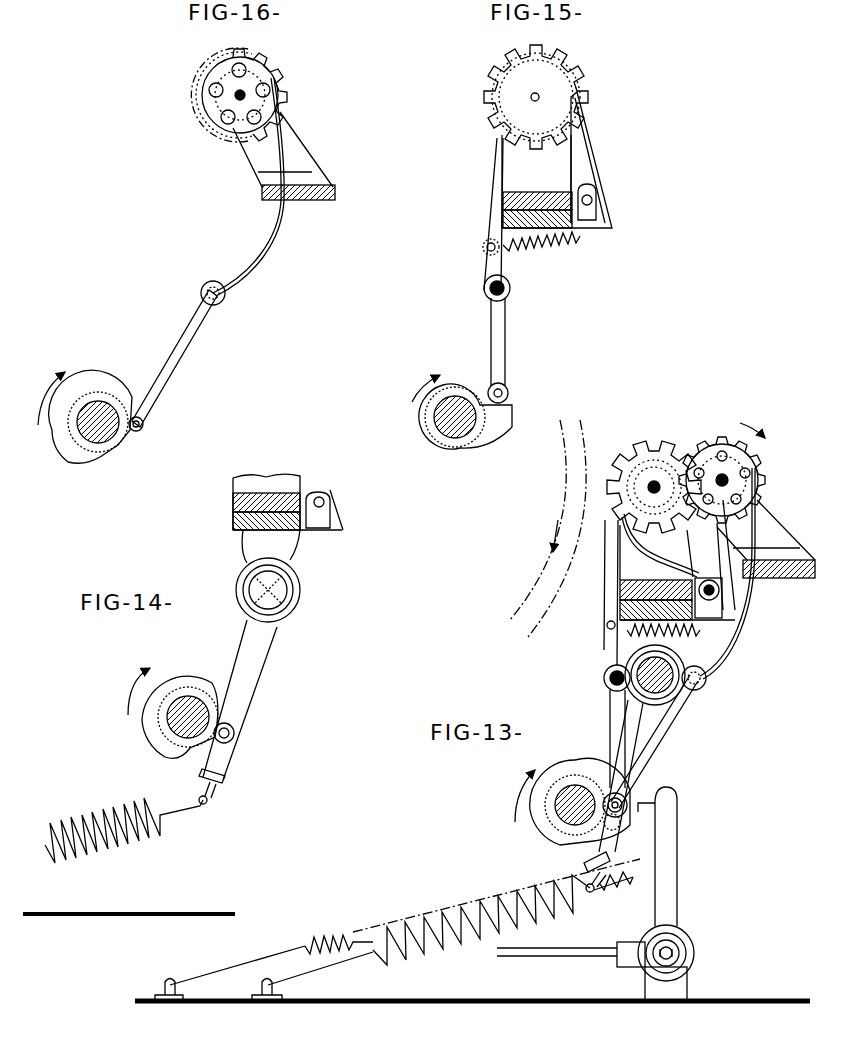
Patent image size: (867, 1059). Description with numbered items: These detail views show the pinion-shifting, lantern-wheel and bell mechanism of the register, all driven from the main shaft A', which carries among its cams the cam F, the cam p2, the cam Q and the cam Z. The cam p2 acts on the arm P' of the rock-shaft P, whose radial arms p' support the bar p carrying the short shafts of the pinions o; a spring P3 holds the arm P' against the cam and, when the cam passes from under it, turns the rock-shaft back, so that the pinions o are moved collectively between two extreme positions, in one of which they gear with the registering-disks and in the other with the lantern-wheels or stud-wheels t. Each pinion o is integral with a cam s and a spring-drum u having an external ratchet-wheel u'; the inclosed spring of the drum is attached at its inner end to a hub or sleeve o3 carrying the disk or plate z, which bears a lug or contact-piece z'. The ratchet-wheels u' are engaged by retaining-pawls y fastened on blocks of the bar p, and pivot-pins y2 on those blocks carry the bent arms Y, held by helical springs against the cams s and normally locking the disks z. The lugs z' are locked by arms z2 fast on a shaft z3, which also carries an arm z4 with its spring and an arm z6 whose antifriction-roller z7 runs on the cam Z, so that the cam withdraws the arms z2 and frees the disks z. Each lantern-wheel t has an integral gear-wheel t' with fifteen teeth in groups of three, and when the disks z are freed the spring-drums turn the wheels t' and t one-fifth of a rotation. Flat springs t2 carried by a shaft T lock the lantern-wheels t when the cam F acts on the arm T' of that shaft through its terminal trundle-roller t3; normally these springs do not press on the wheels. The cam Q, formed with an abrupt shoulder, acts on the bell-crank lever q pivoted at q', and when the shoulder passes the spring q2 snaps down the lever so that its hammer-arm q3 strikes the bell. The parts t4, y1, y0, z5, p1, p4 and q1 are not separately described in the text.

In FIG. 16, the lantern-wheel or stud-wheel t is at (268, 124).
In FIG. 15, the lantern-wheel or stud-wheel t is at (536, 88).
In FIG. 13, the lantern-wheel or stud-wheel t is at (722, 461).
In FIG. 16, the gear-wheel t' is at (251, 93).
In FIG. 13, the gear-wheel t' is at (784, 441).
In FIG. 16, the flat springs t2 is at (281, 136).
In FIG. 13, the flat springs t2 is at (760, 488).
In FIG. 16, the terminal trundle-roller t3 is at (145, 423).
In FIG. 13, the terminal trundle-roller t3 is at (630, 808).
In FIG. 13, the arm t4 is at (764, 503).
In FIG. 16, the shaft T is at (233, 292).
In FIG. 13, the shaft T is at (721, 686).
In FIG. 16, the arm T' is at (174, 358).
In FIG. 13, the arm T' is at (675, 741).
In FIG. 16, the cam F is at (84, 388).
In FIG. 13, the cam F is at (545, 831).
In FIG. 16, the main shaft A' is at (98, 441).
In FIG. 15, the main shaft A' is at (459, 397).
In FIG. 14, the main shaft A' is at (188, 735).
In FIG. 13, the main shaft A' is at (550, 813).
In FIG. 15, the spring-drum u is at (557, 141).
In FIG. 13, the spring-drum u is at (711, 451).
In FIG. 13, the ratchet-wheel u' is at (654, 469).
In FIG. 15, the pinion o is at (539, 99).
In FIG. 13, the pinion o is at (657, 491).
In FIG. 13, the hub or sleeve o3 is at (718, 583).
In FIG. 15, the retaining-pawls y is at (595, 137).
In FIG. 15, the frame base y1 is at (600, 226).
In FIG. 14, the frame base y1 is at (340, 531).
In FIG. 15, the pivot-pins y2 is at (594, 204).
In FIG. 14, the pivot-pins y2 is at (325, 496).
In FIG. 13, the pivot-pins y2 is at (722, 600).
In FIG. 13, the link y0 is at (694, 542).
In FIG. 13, the bent arm Y is at (657, 556).
In FIG. 13, the cam s is at (640, 522).
In FIG. 15, the disk or plate z is at (476, 264).
In FIG. 13, the disk or plate z is at (572, 663).
In FIG. 15, the lug or contact-piece z' is at (524, 75).
In FIG. 13, the lug or contact-piece z' is at (604, 440).
In FIG. 15, the locking arm z2 is at (490, 183).
In FIG. 13, the locking arm z2 is at (598, 597).
In FIG. 15, the shaft z3 is at (507, 294).
In FIG. 13, the shaft z3 is at (612, 683).
In FIG. 15, the arm z4 is at (491, 275).
In FIG. 13, the arm z4 is at (608, 651).
In FIG. 15, the spring z5 is at (552, 238).
In FIG. 13, the spring z5 is at (653, 633).
In FIG. 15, the arm z6 is at (507, 355).
In FIG. 13, the arm z6 is at (613, 712).
In FIG. 15, the antifriction-roller z7 is at (509, 390).
In FIG. 13, the antifriction-roller z7 is at (628, 790).
In FIG. 15, the bar p is at (470, 247).
In FIG. 13, the bar p is at (585, 698).
In FIG. 13, the radial arms p' is at (720, 668).
In FIG. 14, the neck p1 is at (283, 561).
In FIG. 14, the cam p2 is at (253, 604).
In FIG. 14, the roller p4 is at (235, 733).
In FIG. 13, the roller p4 is at (617, 834).
In FIG. 14, the rock-shaft P is at (282, 592).
In FIG. 13, the rock-shaft P is at (655, 675).
In FIG. 14, the arm P' is at (244, 712).
In FIG. 13, the arm P' is at (639, 796).
In FIG. 14, the spring P3 is at (82, 816).
In FIG. 13, the spring P3 is at (447, 943).
In FIG. 13, the bell-crank lever q is at (671, 894).
In FIG. 13, the pivot q' is at (661, 787).
In FIG. 13, the lever pivot q1 is at (673, 952).
In FIG. 13, the spring q2 is at (340, 940).
In FIG. 13, the hammer-arm q3 is at (564, 952).
In FIG. 13, the cam Q is at (603, 893).